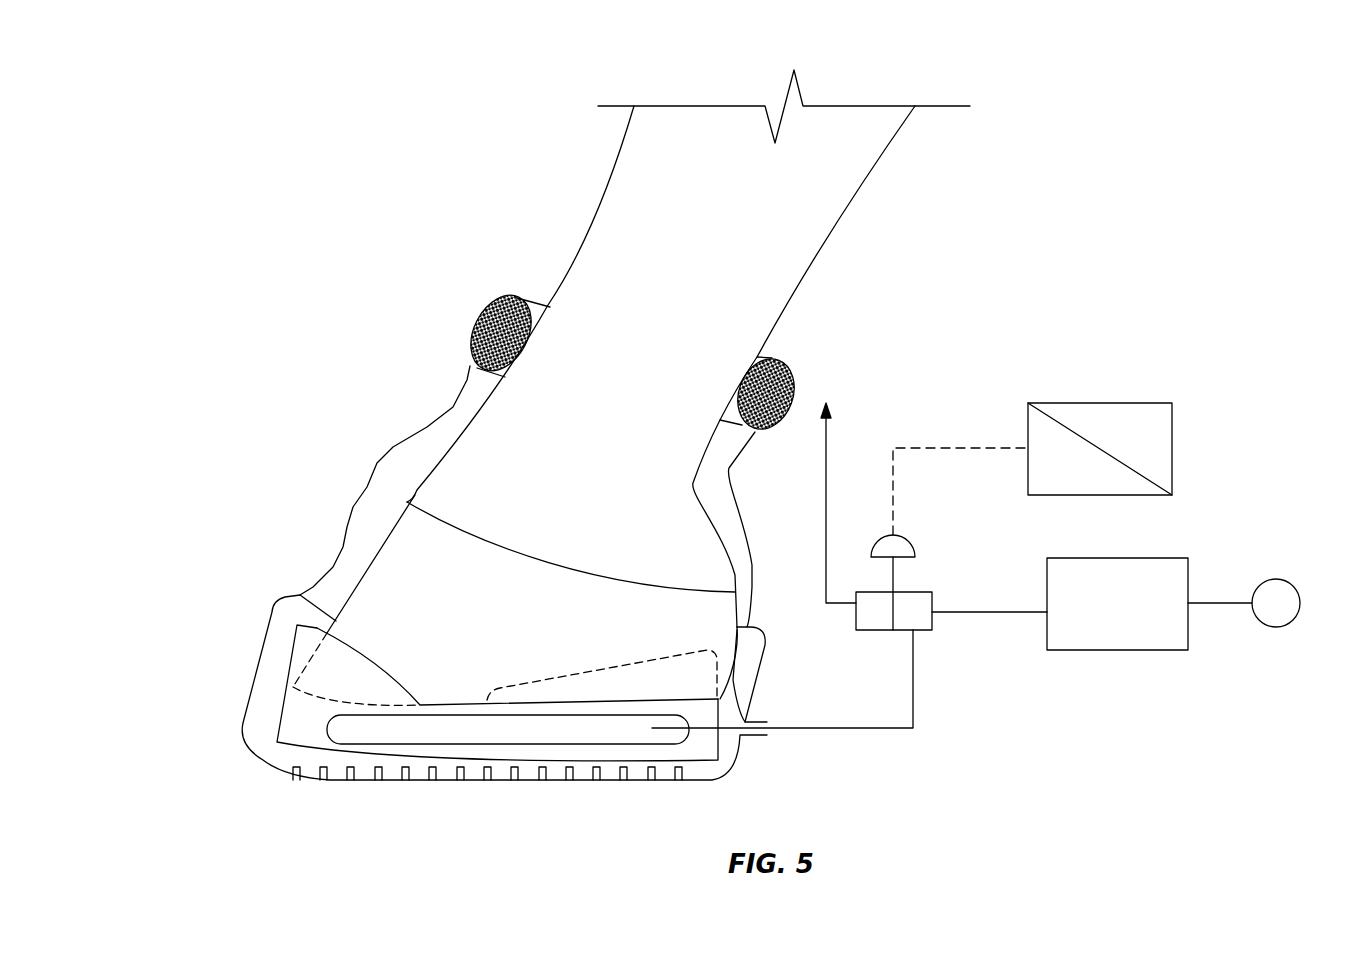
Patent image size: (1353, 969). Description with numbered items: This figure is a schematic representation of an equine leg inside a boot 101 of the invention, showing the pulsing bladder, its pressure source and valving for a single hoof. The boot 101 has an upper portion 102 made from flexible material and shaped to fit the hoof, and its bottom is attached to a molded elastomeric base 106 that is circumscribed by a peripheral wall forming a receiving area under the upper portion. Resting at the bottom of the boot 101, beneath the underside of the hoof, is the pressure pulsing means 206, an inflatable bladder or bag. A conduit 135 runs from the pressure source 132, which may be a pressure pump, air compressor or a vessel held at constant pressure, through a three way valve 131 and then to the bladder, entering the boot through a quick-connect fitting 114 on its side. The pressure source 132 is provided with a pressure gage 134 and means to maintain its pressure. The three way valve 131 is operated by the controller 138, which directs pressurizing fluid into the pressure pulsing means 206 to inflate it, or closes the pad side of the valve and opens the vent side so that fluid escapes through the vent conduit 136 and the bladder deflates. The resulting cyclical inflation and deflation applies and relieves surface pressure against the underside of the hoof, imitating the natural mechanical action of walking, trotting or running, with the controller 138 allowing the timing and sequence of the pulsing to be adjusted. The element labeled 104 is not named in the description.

The boot 101 is at (290, 716).
The upper portion 102 is at (377, 463).
The leg 104 is at (598, 213).
The base 106 is at (362, 782).
The quick-connect fitting 114 is at (755, 736).
The three way valve 131 is at (933, 620).
The pressure source 132 is at (1165, 558).
The pressure gage 134 is at (1278, 580).
The conduit 135 is at (963, 612).
The vent conduit 136 is at (828, 432).
The controller 138 is at (1147, 403).
The pressure pulsing means 206 is at (510, 730).